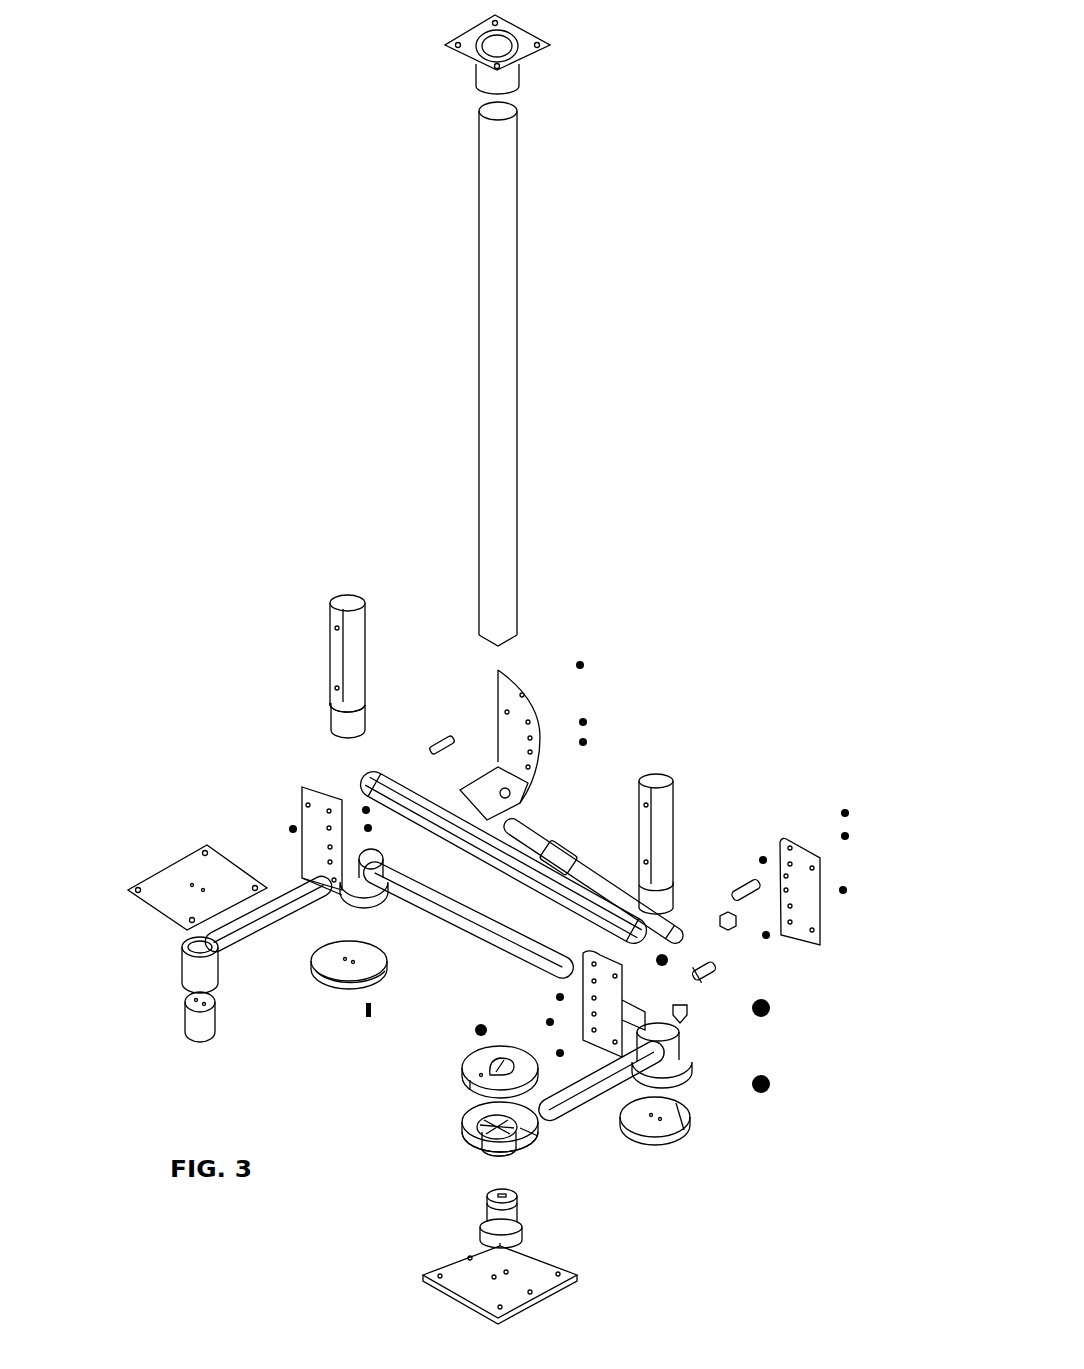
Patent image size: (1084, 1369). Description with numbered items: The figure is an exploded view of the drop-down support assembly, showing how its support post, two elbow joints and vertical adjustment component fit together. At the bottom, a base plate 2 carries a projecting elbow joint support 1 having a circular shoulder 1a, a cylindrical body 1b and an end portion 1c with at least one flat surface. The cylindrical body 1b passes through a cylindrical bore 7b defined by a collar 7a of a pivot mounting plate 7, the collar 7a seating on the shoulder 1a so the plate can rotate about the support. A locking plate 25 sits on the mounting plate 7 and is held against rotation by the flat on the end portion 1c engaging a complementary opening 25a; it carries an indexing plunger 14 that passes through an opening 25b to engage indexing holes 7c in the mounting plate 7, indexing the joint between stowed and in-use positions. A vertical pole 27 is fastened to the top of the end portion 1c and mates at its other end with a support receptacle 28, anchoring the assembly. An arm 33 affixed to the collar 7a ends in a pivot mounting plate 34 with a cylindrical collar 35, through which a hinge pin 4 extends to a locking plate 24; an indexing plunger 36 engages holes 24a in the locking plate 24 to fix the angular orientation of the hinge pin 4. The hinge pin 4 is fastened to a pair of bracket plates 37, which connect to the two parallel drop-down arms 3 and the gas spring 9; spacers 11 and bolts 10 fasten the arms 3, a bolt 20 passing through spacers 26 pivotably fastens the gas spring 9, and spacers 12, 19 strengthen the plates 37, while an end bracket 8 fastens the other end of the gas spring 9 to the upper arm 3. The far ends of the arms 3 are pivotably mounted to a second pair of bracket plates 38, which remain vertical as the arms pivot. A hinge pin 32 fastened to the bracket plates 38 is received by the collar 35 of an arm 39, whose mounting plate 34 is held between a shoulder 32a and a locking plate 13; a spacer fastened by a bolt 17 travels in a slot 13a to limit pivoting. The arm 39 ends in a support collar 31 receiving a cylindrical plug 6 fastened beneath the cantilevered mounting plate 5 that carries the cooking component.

The support receptacle 28 is at (460, 57).
The vertical pole 27 is at (481, 350).
The drop-down arms 3 is at (362, 790).
The end bracket 8 is at (522, 792).
The gas spring 9 is at (575, 858).
The hinge pin 4 is at (662, 773).
The spacer 12 is at (700, 898).
The bolts 10 is at (845, 810).
The bolt 20 is at (857, 840).
The hinge pin 32 is at (331, 642).
The shoulder 32a is at (331, 700).
The bracket plates 38 is at (297, 802).
The cantilevered mounting plate 5 is at (165, 870).
The support collar 31 is at (182, 955).
The cylindrical plug 6 is at (183, 1015).
The cylindrical collar 35 is at (393, 870).
The pivot mounting plate 34 is at (348, 903).
The arm 39 is at (237, 955).
The locking plate 13 is at (320, 995).
The slot 13a is at (372, 976).
The bolt 17 is at (366, 1017).
The indexing plunger 14 is at (476, 1028).
The locking plate 25 is at (462, 1070).
The opening 25a is at (490, 1067).
The opening 25b is at (480, 1095).
The pivot mounting plate 7 is at (462, 1133).
The indexing holes 7c is at (492, 1168).
The collar 7a is at (520, 1157).
The cylindrical bore 7b is at (537, 1137).
The arm 33 is at (587, 1110).
The indexing plunger 36 is at (680, 1013).
The spacer 19 is at (645, 975).
The locking plate 24 is at (697, 1115).
The holes 24a is at (677, 1105).
The spacers 26 is at (680, 960).
The spacers 11 is at (770, 937).
The bracket plates 37 is at (822, 910).
The elbow joint support 1 is at (485, 1198).
The base plate 2 is at (457, 1252).
The circular shoulder 1a is at (523, 1247).
The cylindrical body 1b is at (520, 1217).
The end portion 1c is at (517, 1197).